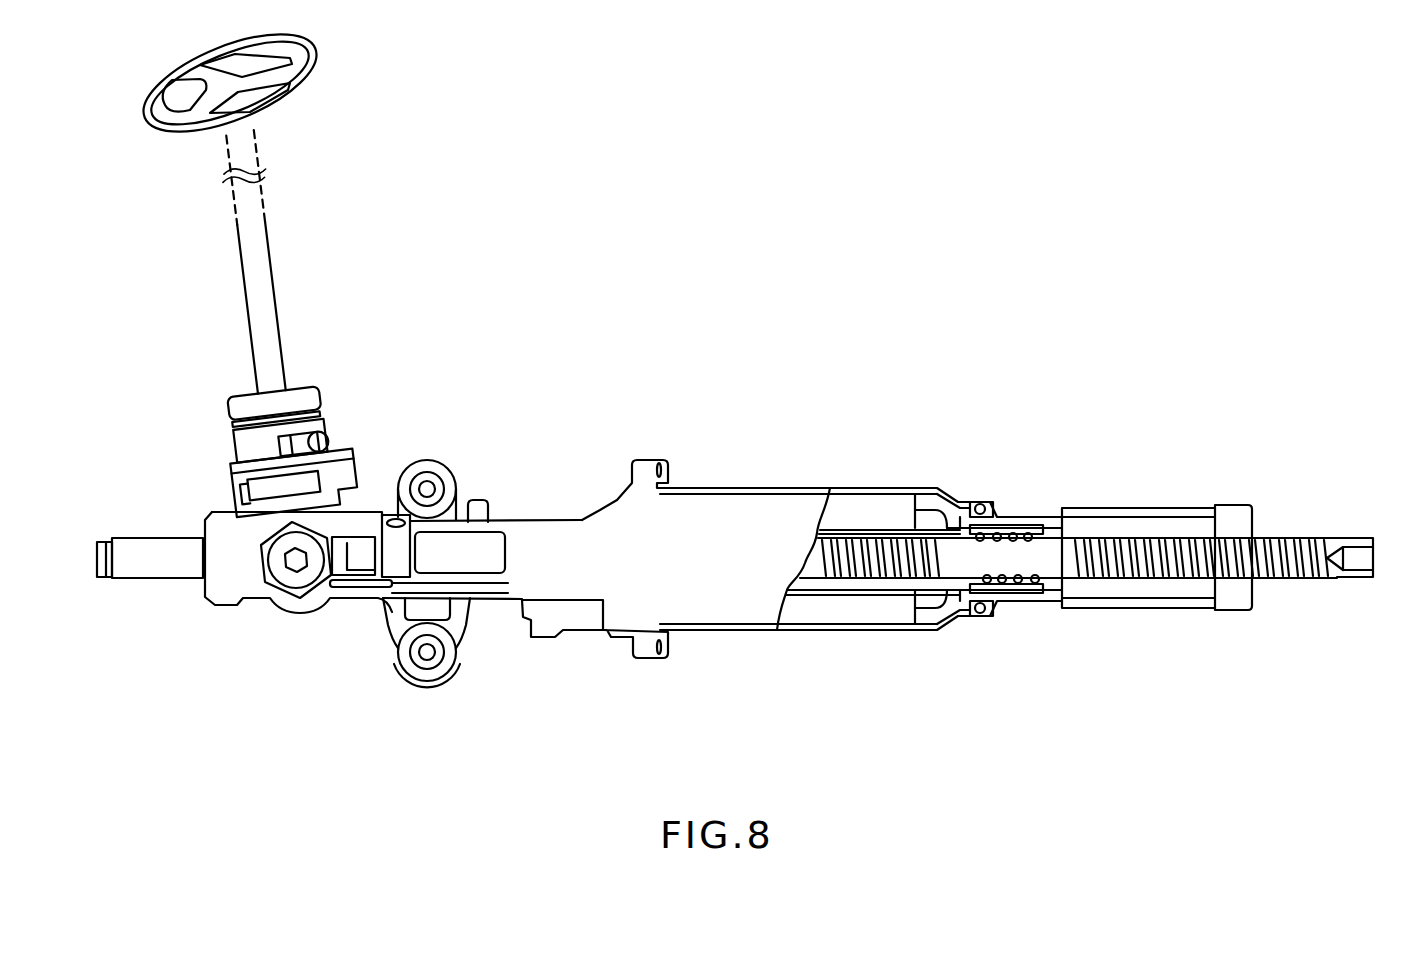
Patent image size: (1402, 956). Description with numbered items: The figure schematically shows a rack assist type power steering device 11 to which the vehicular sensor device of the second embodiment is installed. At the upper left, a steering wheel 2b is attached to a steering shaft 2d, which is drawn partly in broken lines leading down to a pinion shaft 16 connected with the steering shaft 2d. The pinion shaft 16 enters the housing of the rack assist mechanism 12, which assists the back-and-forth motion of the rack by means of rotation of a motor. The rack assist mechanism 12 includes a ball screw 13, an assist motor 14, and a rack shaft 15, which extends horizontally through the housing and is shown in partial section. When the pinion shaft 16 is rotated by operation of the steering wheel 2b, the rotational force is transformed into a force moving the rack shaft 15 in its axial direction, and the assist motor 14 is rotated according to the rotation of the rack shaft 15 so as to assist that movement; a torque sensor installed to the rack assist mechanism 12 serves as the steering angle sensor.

The steering wheel 2b is at (150, 112).
The steering shaft 2d is at (282, 132).
The pinion shaft 16 is at (280, 288).
The power steering device 11 is at (591, 380).
The rack assist mechanism 12 is at (749, 476).
The ball screw 13 is at (1016, 530).
The assist motor 14 is at (868, 502).
The rack shaft 15 is at (813, 568).